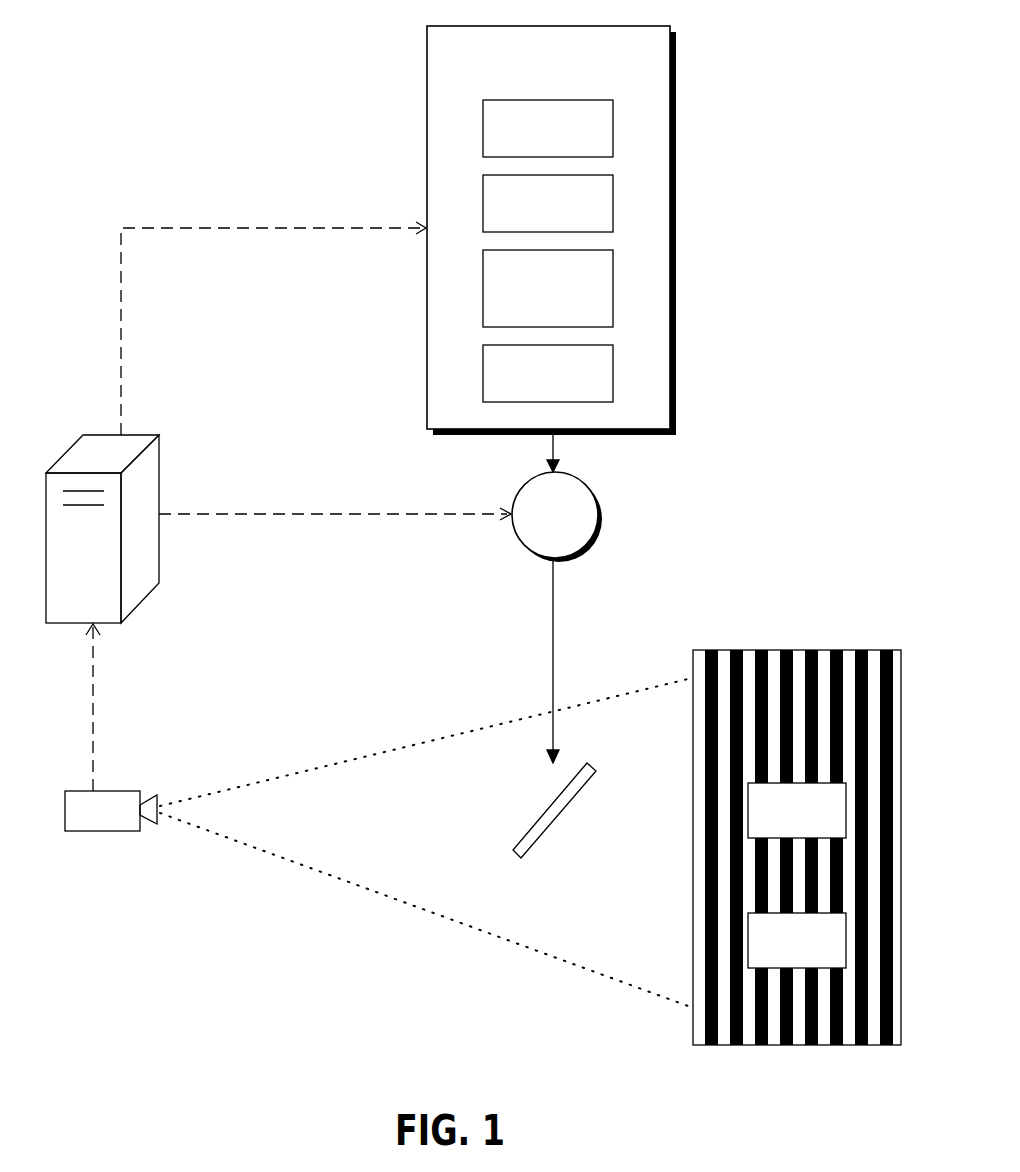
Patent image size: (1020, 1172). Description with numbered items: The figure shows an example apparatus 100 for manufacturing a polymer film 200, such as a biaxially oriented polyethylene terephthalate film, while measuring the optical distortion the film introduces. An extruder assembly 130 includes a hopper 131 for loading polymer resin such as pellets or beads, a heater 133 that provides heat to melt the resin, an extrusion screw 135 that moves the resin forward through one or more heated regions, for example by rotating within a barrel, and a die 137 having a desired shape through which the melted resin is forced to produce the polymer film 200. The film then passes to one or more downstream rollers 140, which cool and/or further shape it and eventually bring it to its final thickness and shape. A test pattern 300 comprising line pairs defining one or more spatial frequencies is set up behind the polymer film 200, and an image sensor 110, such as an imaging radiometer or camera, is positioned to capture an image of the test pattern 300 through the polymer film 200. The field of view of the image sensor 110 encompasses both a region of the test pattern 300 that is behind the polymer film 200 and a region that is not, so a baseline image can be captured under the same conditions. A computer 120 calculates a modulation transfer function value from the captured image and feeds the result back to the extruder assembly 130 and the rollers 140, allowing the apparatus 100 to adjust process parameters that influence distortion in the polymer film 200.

The apparatus 100 is at (190, 90).
The image sensor 110 is at (116, 791).
The computer 120 is at (70, 452).
The extruder assembly 130 is at (560, 230).
The hopper 131 is at (483, 118).
The heater 133 is at (483, 188).
The extrusion screw 135 is at (483, 288).
The die 137 is at (483, 363).
The downstream rollers 140 is at (596, 529).
The polymer film 200 is at (548, 827).
The test pattern 300 is at (784, 650).